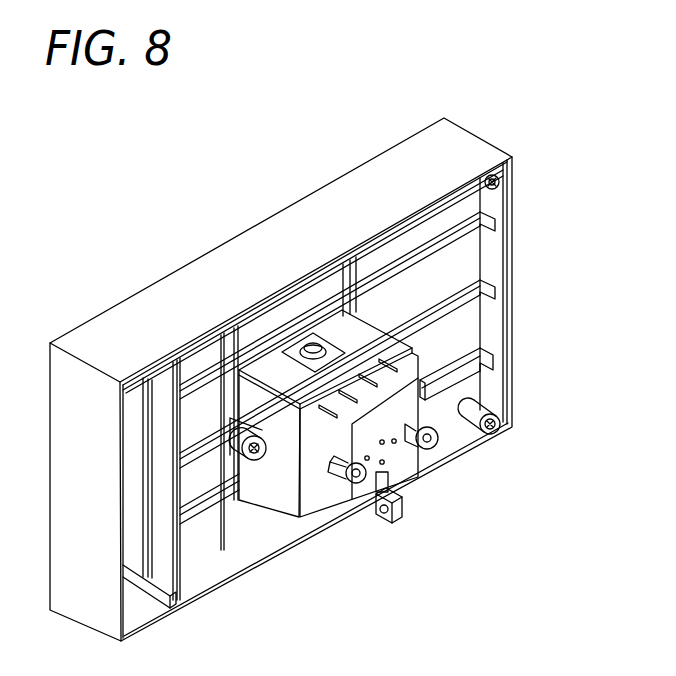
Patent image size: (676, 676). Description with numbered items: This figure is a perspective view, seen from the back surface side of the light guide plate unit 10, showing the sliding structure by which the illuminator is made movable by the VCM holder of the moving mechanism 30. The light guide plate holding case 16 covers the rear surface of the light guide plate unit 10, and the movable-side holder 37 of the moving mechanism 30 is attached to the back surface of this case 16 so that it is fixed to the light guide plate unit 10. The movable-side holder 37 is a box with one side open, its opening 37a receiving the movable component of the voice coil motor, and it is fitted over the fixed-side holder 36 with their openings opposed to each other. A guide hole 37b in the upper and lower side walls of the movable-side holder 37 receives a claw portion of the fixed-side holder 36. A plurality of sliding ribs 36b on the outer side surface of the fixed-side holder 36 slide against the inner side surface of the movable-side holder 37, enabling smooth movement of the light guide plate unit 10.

The light guide plate unit 10 is at (519, 133).
The light guide plate holding case 16 is at (466, 266).
The moving mechanism 30 is at (415, 478).
The fixed-side holder 36 is at (427, 396).
The sliding ribs 36b is at (396, 372).
The movable-side holder 37 is at (284, 419).
The opening 37a is at (300, 398).
The guide hole 37b is at (342, 410).